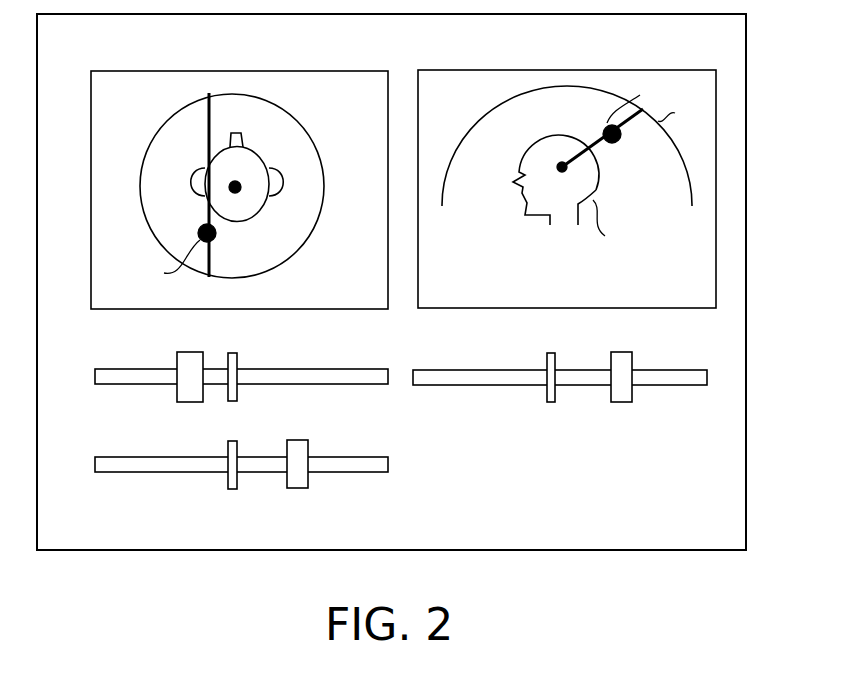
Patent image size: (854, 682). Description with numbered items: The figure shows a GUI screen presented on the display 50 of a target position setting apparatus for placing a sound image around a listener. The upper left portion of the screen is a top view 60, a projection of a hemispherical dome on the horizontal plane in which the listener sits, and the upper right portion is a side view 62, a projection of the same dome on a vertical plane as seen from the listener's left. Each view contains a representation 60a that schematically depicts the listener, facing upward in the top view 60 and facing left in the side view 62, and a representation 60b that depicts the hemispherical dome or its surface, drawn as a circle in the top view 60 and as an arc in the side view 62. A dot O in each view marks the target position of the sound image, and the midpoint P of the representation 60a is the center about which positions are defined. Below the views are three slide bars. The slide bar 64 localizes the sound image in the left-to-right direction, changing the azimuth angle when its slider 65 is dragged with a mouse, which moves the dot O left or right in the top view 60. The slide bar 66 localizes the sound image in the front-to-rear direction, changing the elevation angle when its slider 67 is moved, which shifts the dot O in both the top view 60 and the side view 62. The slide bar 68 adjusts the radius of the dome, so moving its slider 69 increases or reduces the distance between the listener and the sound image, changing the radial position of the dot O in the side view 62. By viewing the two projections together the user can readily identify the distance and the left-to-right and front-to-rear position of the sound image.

The display 50 is at (746, 183).
The top view 60 is at (239, 168).
The side view 62 is at (663, 70).
The representation of the listener 60a is at (257, 153).
The representation of the hemispherical dome 60b is at (307, 129).
The slide bar 64 is at (310, 369).
The slider 65 is at (187, 352).
The slide bar 66 is at (675, 370).
The slider 67 is at (620, 402).
The slide bar 68 is at (317, 473).
The slider 69 is at (298, 440).